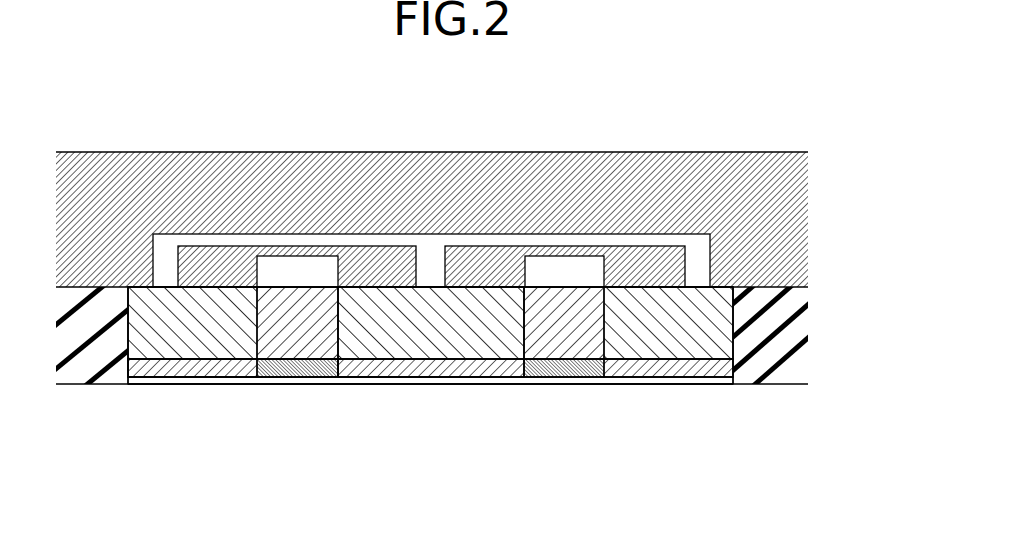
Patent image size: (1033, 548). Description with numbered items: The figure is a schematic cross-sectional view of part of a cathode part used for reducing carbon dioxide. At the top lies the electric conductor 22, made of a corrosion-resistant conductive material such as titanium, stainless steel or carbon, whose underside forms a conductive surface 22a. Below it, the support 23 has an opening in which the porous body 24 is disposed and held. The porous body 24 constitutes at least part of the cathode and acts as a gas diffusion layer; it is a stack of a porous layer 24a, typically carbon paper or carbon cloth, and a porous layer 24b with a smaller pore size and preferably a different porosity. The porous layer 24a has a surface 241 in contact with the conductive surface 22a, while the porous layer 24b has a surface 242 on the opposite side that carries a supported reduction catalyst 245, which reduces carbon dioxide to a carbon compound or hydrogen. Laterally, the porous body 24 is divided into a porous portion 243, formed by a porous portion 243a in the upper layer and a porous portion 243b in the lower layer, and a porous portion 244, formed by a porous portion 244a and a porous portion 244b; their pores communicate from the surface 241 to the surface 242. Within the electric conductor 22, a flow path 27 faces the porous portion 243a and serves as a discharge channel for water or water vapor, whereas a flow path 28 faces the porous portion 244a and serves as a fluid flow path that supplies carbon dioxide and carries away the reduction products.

The electric conductor 22 is at (836, 157).
The conductive surface 22a is at (645, 287).
The support 23 is at (85, 385).
The porous body 24 is at (891, 313).
The porous layer 24a is at (836, 287).
The porous layer 24b is at (836, 358).
The flow path 27 is at (380, 246).
The flow path 28 is at (563, 267).
The surface 241 is at (142, 286).
The surface 242 is at (155, 385).
The porous portion 243 is at (530, 465).
The porous portion 243a is at (388, 325).
The porous portion 243b is at (450, 367).
The porous portion 244 is at (305, 442).
The porous portion 244a is at (233, 378).
The porous portion 244b is at (298, 375).
The reduction catalyst 245 is at (622, 380).